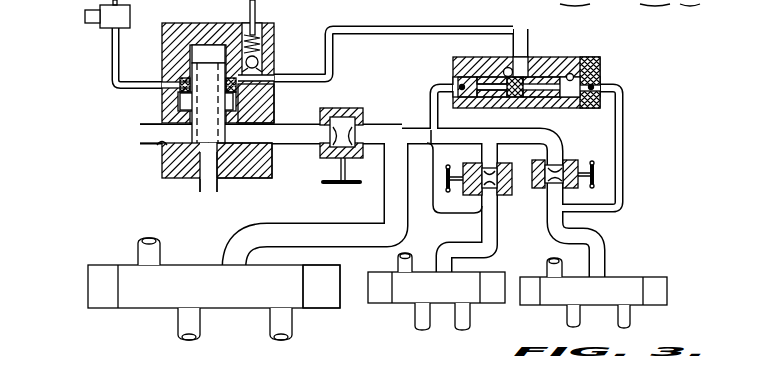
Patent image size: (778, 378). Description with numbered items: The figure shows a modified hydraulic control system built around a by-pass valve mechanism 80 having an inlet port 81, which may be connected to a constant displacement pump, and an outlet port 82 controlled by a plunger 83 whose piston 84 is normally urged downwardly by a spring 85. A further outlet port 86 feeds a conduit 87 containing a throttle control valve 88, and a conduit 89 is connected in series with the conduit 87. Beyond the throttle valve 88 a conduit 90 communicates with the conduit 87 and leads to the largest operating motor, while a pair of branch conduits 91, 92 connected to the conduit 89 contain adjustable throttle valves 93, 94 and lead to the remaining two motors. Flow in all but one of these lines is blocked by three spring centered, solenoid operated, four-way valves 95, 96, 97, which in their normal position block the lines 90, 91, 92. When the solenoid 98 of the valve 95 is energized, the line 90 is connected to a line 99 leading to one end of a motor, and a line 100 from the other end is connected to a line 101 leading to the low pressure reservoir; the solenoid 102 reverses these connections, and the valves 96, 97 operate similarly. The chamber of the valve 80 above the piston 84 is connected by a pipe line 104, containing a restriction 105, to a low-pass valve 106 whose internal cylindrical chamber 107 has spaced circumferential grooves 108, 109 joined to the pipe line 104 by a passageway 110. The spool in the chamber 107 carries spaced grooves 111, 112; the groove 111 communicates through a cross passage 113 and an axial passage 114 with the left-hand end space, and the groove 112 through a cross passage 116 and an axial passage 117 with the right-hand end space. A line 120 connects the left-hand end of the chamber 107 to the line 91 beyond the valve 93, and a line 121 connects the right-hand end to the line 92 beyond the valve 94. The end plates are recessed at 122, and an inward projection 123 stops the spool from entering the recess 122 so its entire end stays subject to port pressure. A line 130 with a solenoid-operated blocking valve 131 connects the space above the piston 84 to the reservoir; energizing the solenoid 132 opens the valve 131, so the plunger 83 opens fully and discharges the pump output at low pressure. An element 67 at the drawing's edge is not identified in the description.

The conduit 67 is at (645, 4).
The valve mechanism 80 is at (158, 56).
The inlet port 81 is at (160, 147).
The outlet port 82 is at (228, 182).
The plunger 83 is at (225, 138).
The piston 84 is at (262, 110).
The spring 85 is at (178, 94).
The outlet port 86 is at (285, 143).
The conduit 87 is at (302, 127).
The throttle control valve 88 is at (364, 124).
The conduit 89 is at (537, 130).
The conduit 90 is at (386, 206).
The branch conduit 91 is at (496, 224).
The branch conduit 92 is at (560, 226).
The adjustable throttle valve 93 is at (500, 167).
The adjustable throttle valve 94 is at (565, 162).
The four-way valve 95 is at (153, 304).
The four-way valve 96 is at (408, 306).
The four-way valve 97 is at (624, 278).
The solenoid 98 is at (108, 305).
The line 99 is at (292, 334).
The line 100 is at (200, 334).
The line 101 is at (157, 246).
The solenoid 102 is at (330, 303).
The pipe line 104 is at (392, 30).
The restriction 105 is at (329, 47).
The low-pass valve 106 is at (577, 56).
The internal cylindrical chamber 107 is at (601, 74).
The circumferential groove 108 is at (466, 104).
The circumferential groove 109 is at (520, 104).
The passageway 110 is at (505, 68).
The spool groove 111 is at (462, 103).
The spool groove 112 is at (502, 99).
The cross passage 113 is at (519, 52).
The axial passage 114 is at (466, 64).
The cross passage 116 is at (540, 62).
The axial passage 117 is at (569, 72).
The line 120 is at (442, 96).
The line 121 is at (623, 137).
The recess 122 is at (445, 86).
The inward projection 123 is at (456, 80).
The line 130 is at (112, 42).
The solenoid-operated blocking valve 131 is at (131, 16).
The solenoid 132 is at (85, 15).